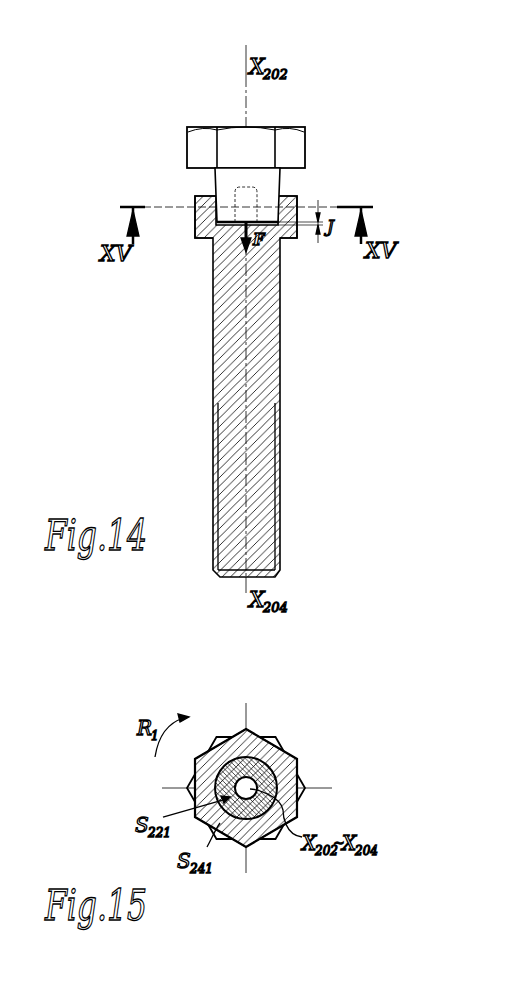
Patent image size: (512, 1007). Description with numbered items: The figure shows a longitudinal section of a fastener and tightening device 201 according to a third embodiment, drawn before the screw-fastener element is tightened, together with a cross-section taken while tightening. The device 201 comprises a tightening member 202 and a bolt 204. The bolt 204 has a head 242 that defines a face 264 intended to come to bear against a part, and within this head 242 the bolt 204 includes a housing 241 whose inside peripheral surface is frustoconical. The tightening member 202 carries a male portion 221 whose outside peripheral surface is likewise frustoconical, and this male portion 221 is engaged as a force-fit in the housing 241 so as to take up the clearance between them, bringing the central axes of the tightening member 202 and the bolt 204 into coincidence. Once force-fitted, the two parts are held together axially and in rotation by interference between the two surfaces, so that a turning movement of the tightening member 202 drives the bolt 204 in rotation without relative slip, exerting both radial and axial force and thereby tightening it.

In FIG. 14, the device 201 is at (276, 137).
In FIG. 14, the tightening member 202 is at (200, 140).
In FIG. 14, the male portion 221 is at (270, 183).
In FIG. 15, the male portion 221 is at (283, 752).
In FIG. 14, the housing 241 is at (230, 218).
In FIG. 14, the head 242 is at (284, 238).
In FIG. 15, the head 242 is at (277, 840).
In FIG. 14, the face 264 is at (202, 239).
In FIG. 14, the bolt 204 is at (267, 355).